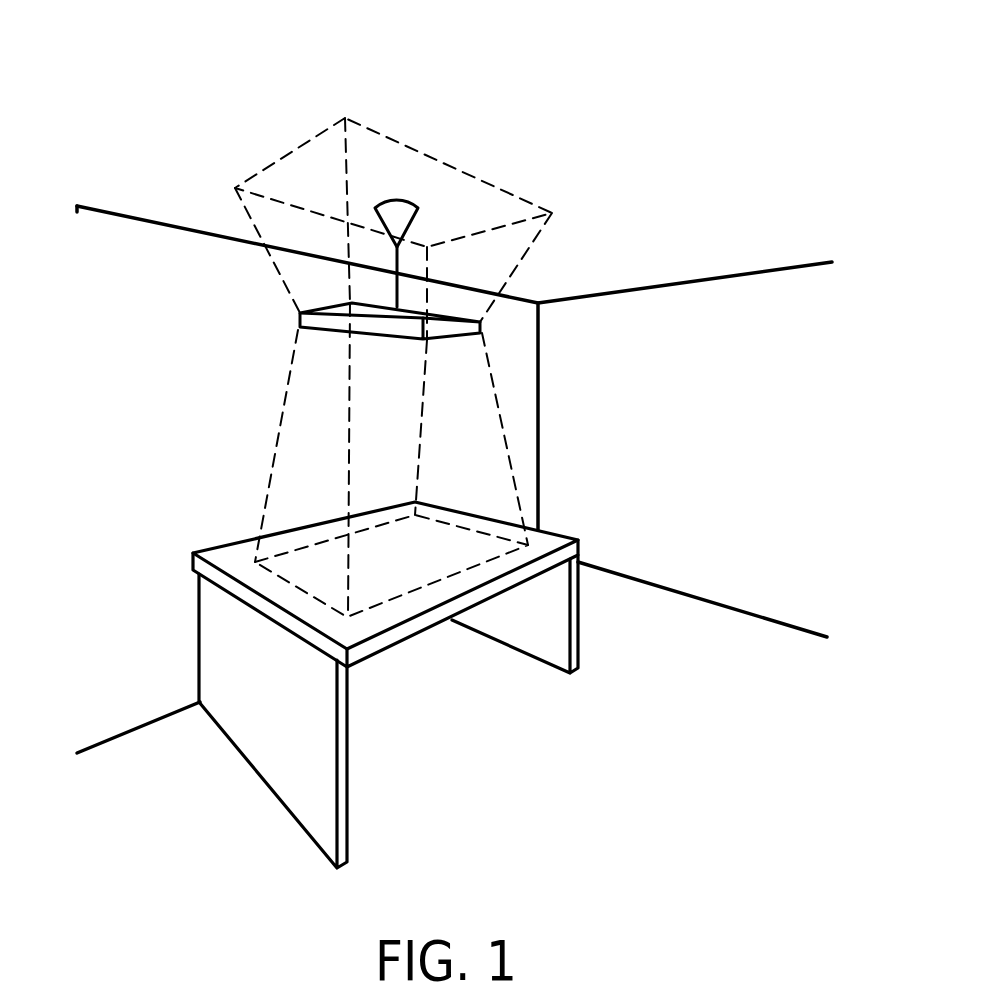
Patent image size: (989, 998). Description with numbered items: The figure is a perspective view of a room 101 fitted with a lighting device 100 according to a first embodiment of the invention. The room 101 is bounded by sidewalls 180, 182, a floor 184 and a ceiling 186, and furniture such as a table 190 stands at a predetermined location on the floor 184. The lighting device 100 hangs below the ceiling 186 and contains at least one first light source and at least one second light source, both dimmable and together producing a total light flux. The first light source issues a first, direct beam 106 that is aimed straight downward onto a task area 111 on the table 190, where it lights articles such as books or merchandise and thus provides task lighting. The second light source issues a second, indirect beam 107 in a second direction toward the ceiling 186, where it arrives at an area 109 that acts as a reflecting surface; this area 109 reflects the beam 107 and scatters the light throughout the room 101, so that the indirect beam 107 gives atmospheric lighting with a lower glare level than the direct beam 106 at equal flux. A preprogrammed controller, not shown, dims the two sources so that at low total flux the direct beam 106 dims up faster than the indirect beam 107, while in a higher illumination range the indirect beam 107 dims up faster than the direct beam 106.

The lighting device 100 is at (284, 319).
The room 101 is at (106, 141).
The first, direct beam 106 is at (490, 445).
The second, indirect beam 107 is at (513, 242).
The area of the ceiling 109 is at (438, 162).
The task area 111 is at (393, 598).
The sidewall 180 is at (123, 457).
The sidewall 182 is at (763, 435).
The floor 184 is at (608, 808).
The ceiling 186 is at (735, 222).
The table 190 is at (282, 776).